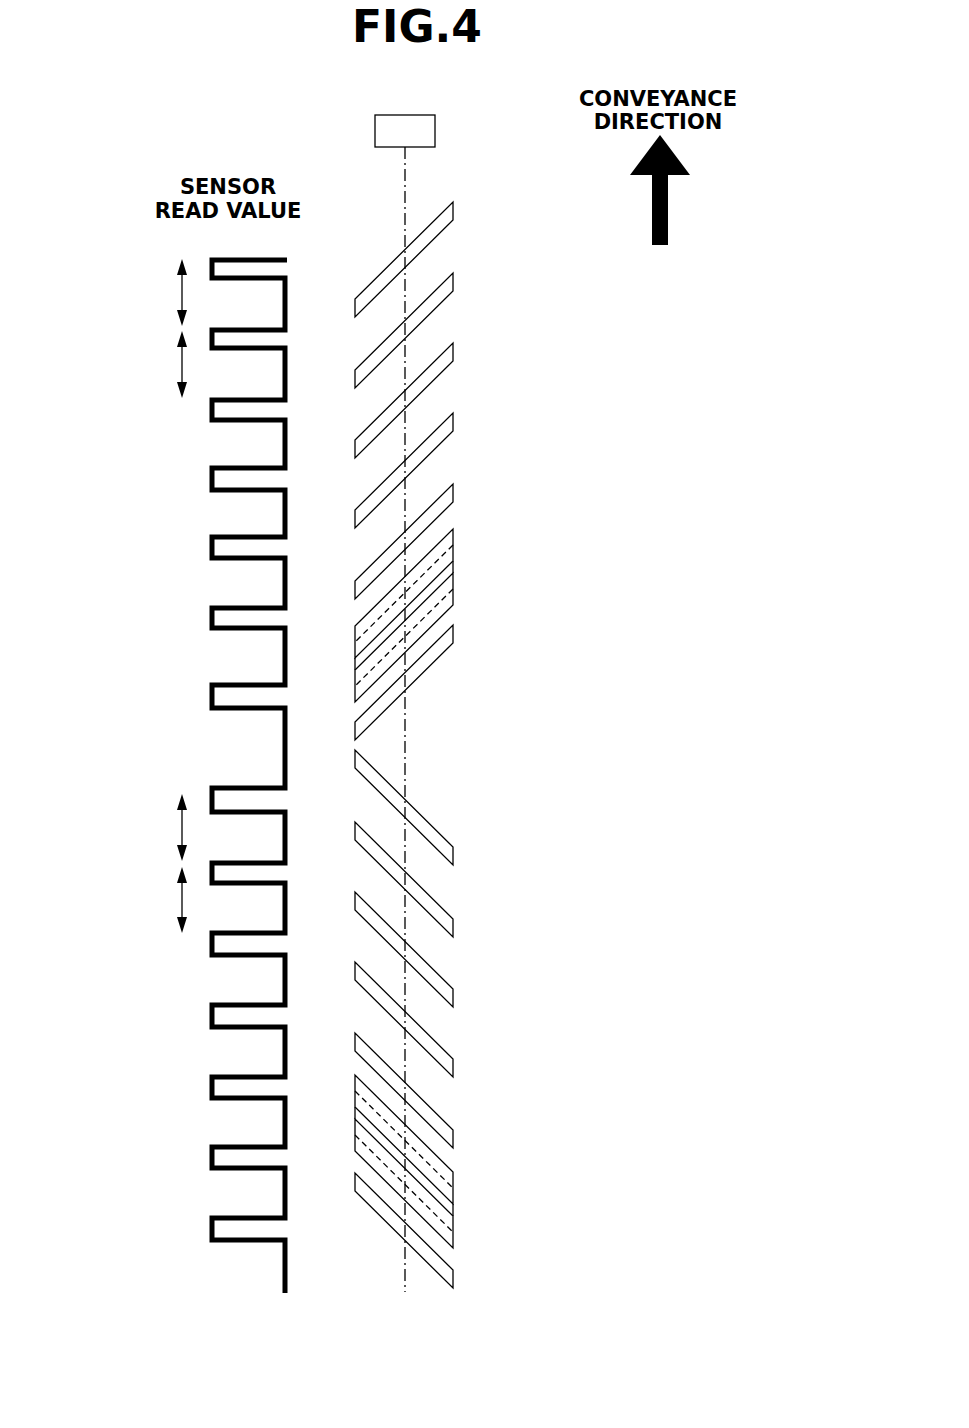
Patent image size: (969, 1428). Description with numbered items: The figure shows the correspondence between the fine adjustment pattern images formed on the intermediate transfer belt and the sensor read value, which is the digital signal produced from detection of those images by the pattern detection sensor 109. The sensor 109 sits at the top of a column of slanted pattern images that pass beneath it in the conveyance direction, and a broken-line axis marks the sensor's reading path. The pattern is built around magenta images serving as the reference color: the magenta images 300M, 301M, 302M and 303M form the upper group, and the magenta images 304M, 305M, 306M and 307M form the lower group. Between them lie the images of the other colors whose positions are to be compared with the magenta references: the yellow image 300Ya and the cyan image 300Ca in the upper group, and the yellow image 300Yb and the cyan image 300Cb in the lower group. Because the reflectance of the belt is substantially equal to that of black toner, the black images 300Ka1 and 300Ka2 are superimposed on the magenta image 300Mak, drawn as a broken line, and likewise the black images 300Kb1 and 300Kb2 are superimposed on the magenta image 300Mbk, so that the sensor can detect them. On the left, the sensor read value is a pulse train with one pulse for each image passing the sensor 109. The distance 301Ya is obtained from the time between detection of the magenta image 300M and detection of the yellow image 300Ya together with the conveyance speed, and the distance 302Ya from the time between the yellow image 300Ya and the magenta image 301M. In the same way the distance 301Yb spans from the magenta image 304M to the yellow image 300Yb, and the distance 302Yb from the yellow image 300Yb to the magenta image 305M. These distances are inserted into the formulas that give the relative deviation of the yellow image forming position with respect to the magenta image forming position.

The pattern detection sensor 109 is at (437, 130).
The magenta image 300M is at (456, 208).
The yellow image 300Ya is at (456, 280).
The magenta image 301M is at (456, 350).
The cyan image 300Ca is at (456, 420).
The magenta image 302M is at (456, 491).
The black image 300Ka1 is at (456, 536).
The magenta image 300Mak is at (458, 558).
The black image 300Ka2 is at (456, 596).
The magenta image 303M is at (456, 635).
The magenta image 304M is at (456, 858).
The yellow image 300Yb is at (456, 930).
The magenta image 305M is at (456, 1000).
The cyan image 300Cb is at (456, 1069).
The magenta image 306M is at (456, 1141).
The black image 300Kb1 is at (456, 1180).
The magenta image 300Mbk is at (458, 1207).
The black image 300Kb2 is at (456, 1240).
The magenta image 307M is at (456, 1280).
The distance 301Ya is at (176, 296).
The distance 302Ya is at (176, 368).
The distance 301Yb is at (176, 827).
The distance 302Yb is at (176, 899).